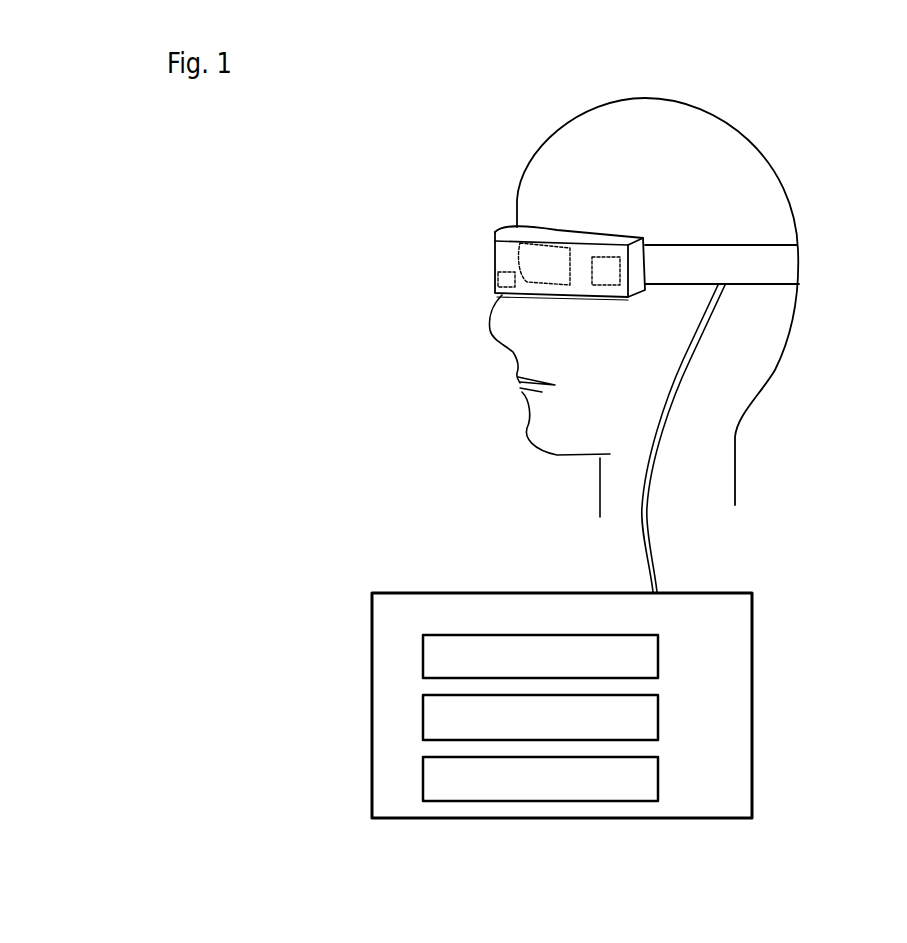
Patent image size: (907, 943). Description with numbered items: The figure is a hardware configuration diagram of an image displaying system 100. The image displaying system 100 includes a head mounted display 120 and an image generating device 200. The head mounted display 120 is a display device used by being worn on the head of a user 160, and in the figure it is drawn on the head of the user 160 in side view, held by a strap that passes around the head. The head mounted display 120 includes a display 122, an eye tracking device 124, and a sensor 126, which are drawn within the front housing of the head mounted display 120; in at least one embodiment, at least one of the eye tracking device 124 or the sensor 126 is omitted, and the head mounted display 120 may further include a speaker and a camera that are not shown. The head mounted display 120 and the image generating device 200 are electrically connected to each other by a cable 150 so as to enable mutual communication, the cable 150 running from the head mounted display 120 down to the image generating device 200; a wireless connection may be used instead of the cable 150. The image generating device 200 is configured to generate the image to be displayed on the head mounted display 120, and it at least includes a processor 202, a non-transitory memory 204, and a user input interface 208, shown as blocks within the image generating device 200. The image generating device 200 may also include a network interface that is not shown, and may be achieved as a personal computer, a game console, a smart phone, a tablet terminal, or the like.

The image displaying system 100 is at (336, 155).
The head mounted display 120 is at (522, 279).
The display 122 is at (523, 260).
The eye tracking device 124 is at (505, 280).
The sensor 126 is at (592, 278).
The cable 150 is at (700, 338).
The user 160 is at (783, 177).
The image generating device 200 is at (596, 692).
The processor 202 is at (658, 649).
The non-transitory memory 204 is at (658, 716).
The user input interface 208 is at (658, 777).